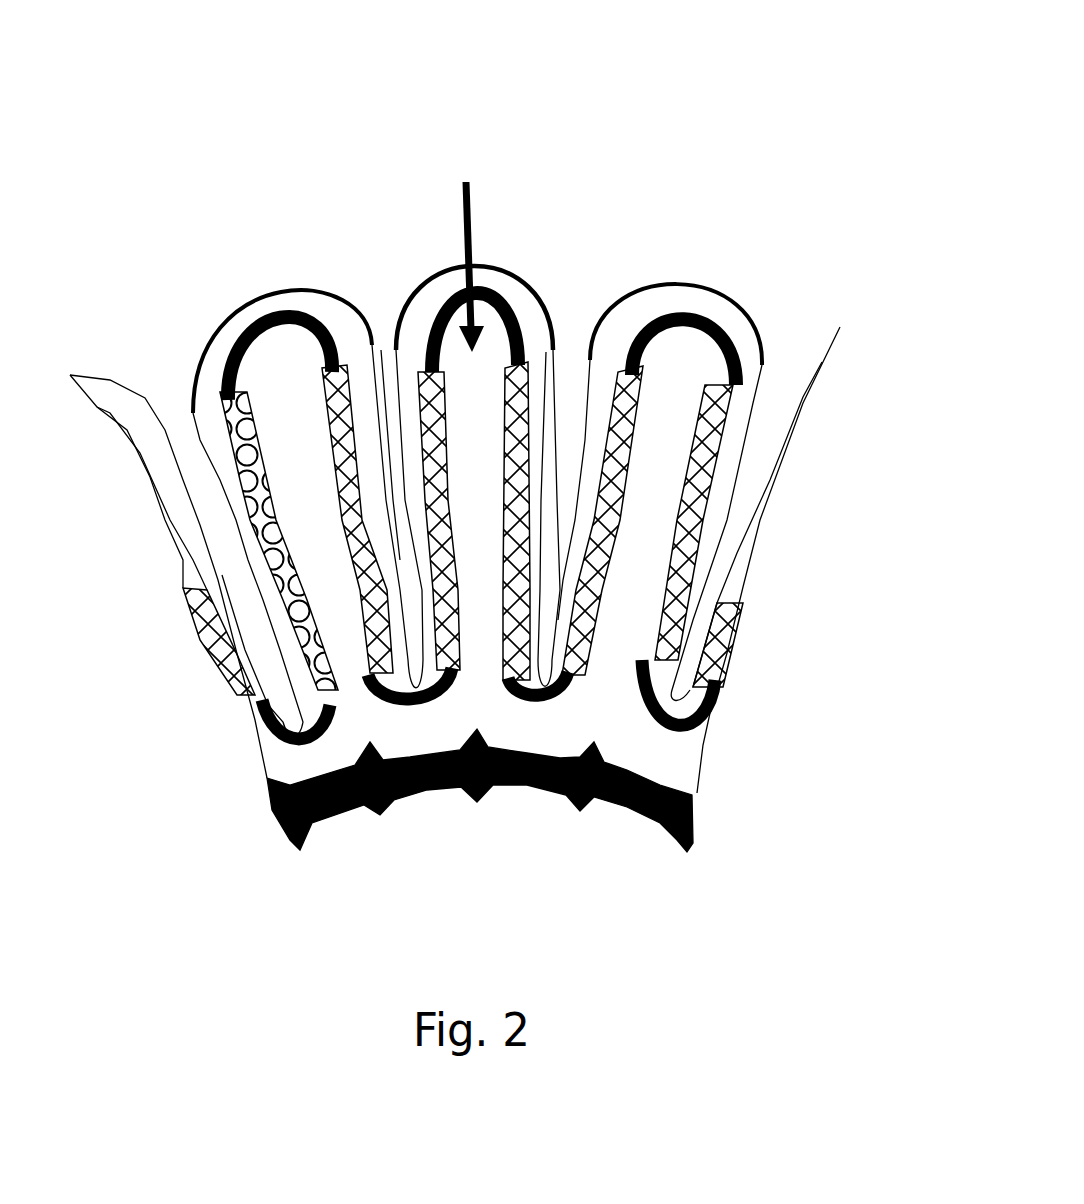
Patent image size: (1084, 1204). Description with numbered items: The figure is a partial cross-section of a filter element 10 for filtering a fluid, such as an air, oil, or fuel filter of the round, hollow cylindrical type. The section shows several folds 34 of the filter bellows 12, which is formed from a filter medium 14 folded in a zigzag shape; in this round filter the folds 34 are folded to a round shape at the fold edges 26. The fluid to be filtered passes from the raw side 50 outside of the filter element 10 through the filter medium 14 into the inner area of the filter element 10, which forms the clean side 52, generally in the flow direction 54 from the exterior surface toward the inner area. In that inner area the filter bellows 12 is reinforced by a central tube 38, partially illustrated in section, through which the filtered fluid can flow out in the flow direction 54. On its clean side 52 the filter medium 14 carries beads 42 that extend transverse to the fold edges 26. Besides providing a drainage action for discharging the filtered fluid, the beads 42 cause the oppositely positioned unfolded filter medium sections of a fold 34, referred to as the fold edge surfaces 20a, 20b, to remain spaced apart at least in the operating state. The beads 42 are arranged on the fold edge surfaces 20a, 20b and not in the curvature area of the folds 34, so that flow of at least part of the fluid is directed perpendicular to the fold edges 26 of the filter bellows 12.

The filter element 10 is at (693, 110).
The filter bellows 12 is at (490, 533).
The folds 34 is at (455, 533).
The filter medium 14 is at (262, 293).
The fold edge surface 20a is at (415, 425).
The fold edge surface 20b is at (547, 430).
The fold edges 26 is at (490, 262).
The central tube 38 is at (312, 823).
The beads 42 is at (238, 410).
The raw side 50 is at (455, 533).
The clean side 52 is at (463, 516).
The flow direction 54 is at (452, 265).